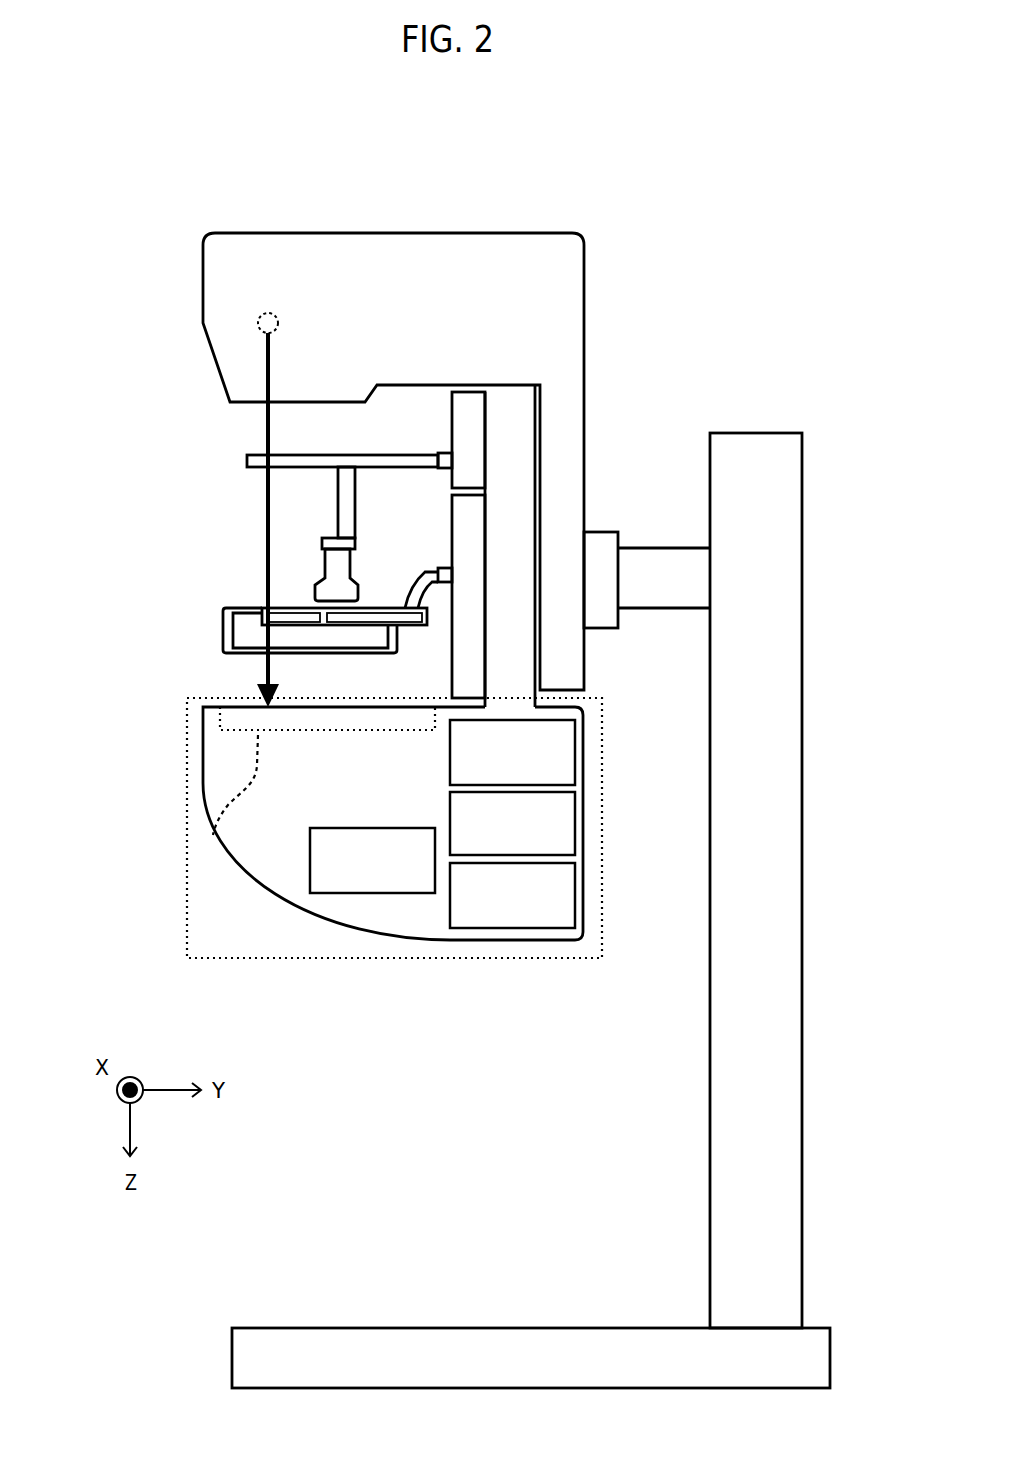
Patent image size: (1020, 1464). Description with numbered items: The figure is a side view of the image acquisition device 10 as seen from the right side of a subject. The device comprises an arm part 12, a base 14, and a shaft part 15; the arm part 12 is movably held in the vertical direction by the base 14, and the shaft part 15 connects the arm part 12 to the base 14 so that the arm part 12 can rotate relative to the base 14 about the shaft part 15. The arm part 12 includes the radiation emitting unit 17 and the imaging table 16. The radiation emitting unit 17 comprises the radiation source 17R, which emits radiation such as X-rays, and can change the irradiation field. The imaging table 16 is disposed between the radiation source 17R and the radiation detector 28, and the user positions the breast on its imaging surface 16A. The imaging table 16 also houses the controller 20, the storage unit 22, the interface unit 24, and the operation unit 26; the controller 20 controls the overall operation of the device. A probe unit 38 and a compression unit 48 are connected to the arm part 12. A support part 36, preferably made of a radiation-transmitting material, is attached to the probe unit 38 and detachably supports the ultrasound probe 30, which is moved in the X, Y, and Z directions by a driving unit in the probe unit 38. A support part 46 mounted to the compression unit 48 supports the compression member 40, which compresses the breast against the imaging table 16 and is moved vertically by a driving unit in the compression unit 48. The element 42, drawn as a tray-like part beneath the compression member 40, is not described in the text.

The image acquisition device 10 is at (755, 156).
The arm part 12 is at (547, 220).
The base 14 is at (751, 433).
The shaft part 15 is at (668, 548).
The imaging table 16 is at (187, 748).
The imaging surface 16A is at (217, 705).
The radiation emitting unit 17 is at (251, 288).
The radiation source 17R is at (257, 325).
The controller 20 is at (575, 748).
The storage unit 22 is at (575, 822).
The interface (I/F) unit 24 is at (575, 896).
The operation unit 26 is at (310, 868).
The radiation detector 28 is at (229, 803).
The ultrasound probe 30 is at (318, 583).
The support part 36 is at (365, 455).
The probe unit 38 is at (452, 407).
The compression member 40 is at (247, 590).
The radiation detector 42 is at (223, 628).
The support part 46 is at (420, 578).
The compression unit 48 is at (452, 513).